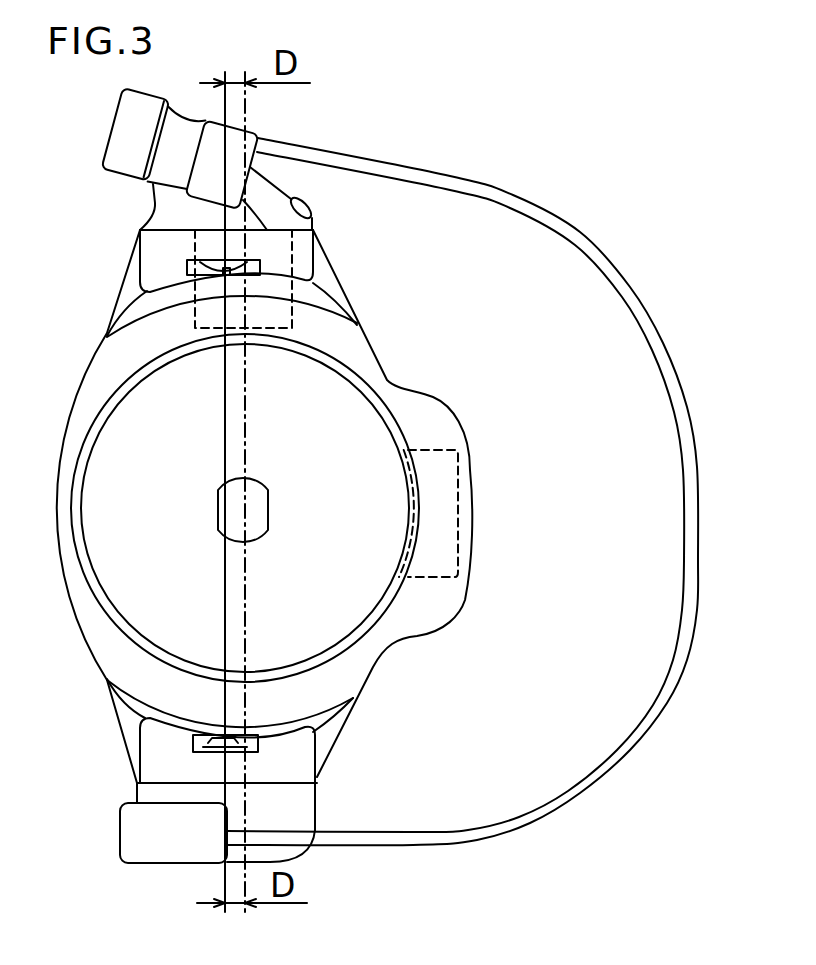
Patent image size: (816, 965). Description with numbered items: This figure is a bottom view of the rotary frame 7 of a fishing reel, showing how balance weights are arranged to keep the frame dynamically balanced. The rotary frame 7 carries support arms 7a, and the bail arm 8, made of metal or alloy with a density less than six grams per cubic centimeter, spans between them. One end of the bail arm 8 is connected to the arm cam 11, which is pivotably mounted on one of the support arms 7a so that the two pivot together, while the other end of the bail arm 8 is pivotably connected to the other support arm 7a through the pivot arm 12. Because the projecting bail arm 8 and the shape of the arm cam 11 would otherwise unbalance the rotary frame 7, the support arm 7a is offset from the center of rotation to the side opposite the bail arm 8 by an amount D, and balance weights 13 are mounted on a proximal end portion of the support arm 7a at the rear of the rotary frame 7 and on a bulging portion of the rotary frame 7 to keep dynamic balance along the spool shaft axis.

The rotary frame 7 is at (374, 686).
The support arm 7a is at (133, 274).
The bail arm 8 is at (510, 193).
The arm cam 11 is at (315, 217).
The pivot arm 12 is at (163, 855).
The balance weights 13 is at (293, 262).